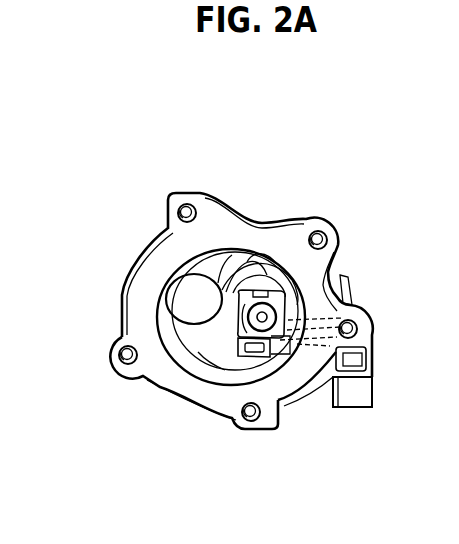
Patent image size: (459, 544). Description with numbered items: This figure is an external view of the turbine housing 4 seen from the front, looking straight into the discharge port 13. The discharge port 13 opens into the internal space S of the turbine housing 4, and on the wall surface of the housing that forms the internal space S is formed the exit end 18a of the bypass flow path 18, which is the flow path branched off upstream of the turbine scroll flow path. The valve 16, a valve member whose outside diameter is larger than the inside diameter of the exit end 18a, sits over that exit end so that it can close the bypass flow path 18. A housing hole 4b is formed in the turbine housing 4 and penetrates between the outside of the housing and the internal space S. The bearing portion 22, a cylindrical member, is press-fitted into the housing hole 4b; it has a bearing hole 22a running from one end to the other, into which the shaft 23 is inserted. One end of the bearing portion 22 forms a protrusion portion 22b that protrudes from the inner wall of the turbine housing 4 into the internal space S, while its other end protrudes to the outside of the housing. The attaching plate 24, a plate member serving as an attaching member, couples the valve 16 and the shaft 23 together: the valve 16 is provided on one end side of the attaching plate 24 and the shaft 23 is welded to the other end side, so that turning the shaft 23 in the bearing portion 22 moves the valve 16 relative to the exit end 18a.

The turbine housing 4 is at (196, 148).
The housing hole 4b is at (338, 378).
The discharge port 13 is at (206, 366).
The valve 16 is at (222, 302).
The bypass flow path 18 is at (286, 300).
The exit end 18a is at (254, 318).
The bearing portion 22 is at (304, 310).
The bearing hole 22a is at (306, 354).
The protrusion portion 22b is at (352, 359).
The shaft 23 is at (270, 358).
The attaching plate 24 is at (205, 343).
The internal space S is at (202, 345).